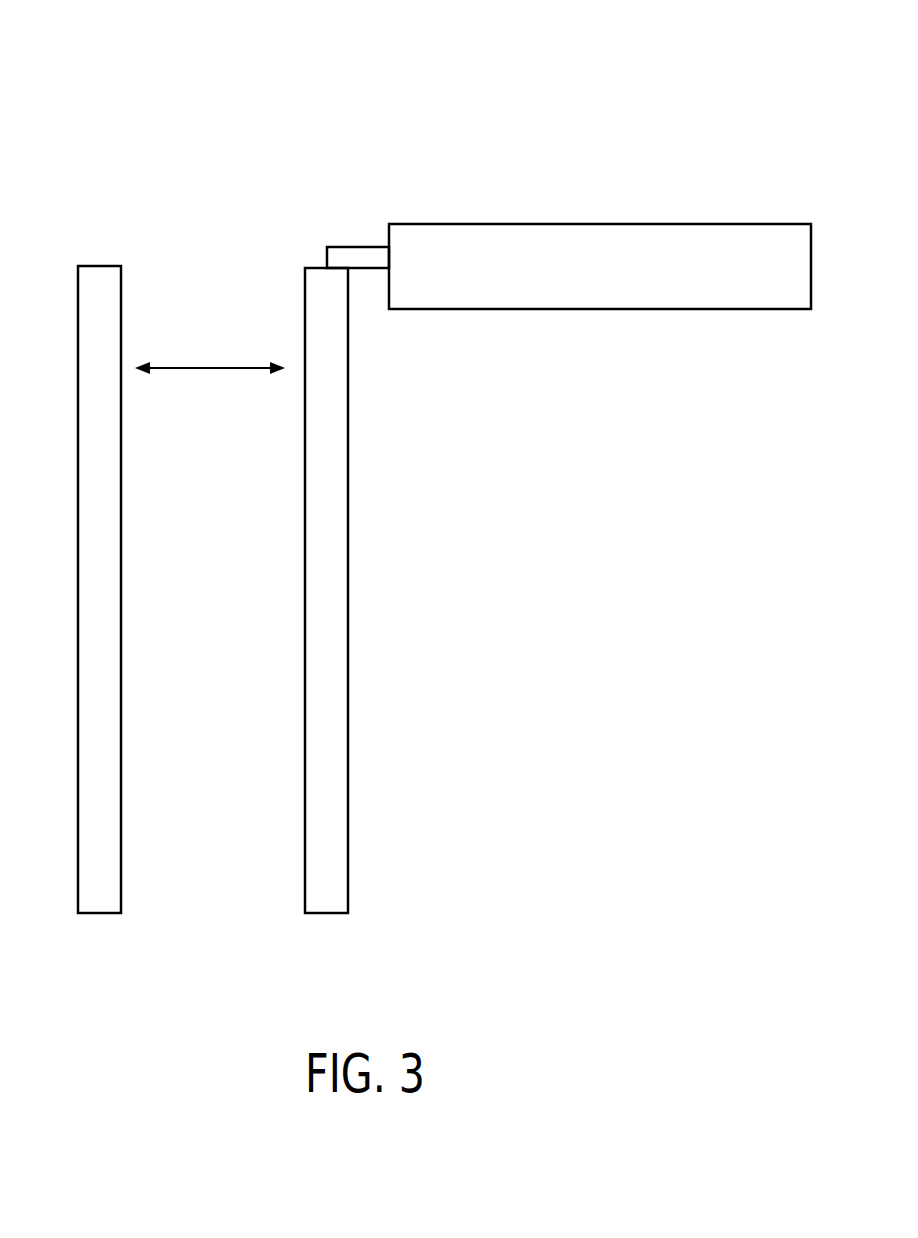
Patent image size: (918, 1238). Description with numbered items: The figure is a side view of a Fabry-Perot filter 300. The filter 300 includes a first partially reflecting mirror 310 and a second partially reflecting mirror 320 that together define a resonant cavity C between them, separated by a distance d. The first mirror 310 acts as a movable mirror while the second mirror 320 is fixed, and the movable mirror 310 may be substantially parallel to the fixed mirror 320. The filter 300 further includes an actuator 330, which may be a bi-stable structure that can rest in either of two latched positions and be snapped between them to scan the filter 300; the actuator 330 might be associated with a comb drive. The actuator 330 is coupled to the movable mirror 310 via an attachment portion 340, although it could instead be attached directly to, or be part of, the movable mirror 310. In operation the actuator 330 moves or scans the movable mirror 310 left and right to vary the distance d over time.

The Fabry-Perot filter 300 is at (176, 54).
The first partially reflecting mirror 310 is at (305, 557).
The second partially reflecting mirror 320 is at (78, 556).
The actuator 330 is at (697, 311).
The attachment portion 340 is at (327, 251).